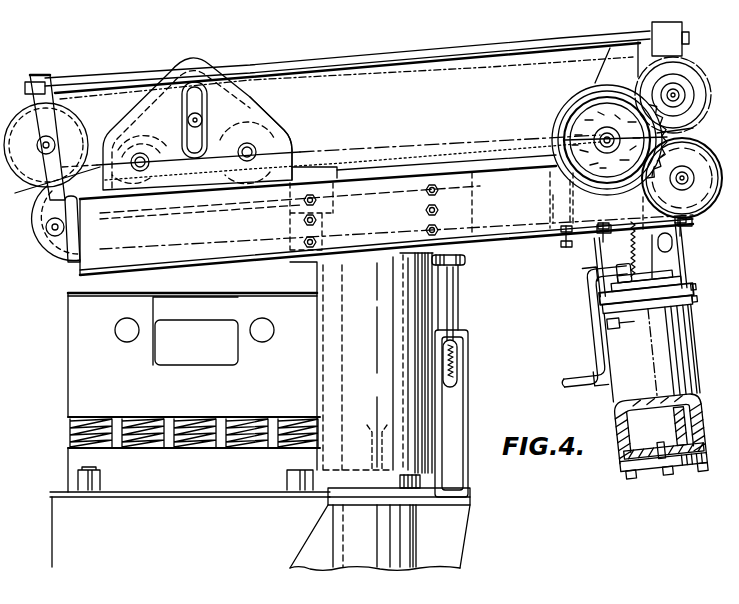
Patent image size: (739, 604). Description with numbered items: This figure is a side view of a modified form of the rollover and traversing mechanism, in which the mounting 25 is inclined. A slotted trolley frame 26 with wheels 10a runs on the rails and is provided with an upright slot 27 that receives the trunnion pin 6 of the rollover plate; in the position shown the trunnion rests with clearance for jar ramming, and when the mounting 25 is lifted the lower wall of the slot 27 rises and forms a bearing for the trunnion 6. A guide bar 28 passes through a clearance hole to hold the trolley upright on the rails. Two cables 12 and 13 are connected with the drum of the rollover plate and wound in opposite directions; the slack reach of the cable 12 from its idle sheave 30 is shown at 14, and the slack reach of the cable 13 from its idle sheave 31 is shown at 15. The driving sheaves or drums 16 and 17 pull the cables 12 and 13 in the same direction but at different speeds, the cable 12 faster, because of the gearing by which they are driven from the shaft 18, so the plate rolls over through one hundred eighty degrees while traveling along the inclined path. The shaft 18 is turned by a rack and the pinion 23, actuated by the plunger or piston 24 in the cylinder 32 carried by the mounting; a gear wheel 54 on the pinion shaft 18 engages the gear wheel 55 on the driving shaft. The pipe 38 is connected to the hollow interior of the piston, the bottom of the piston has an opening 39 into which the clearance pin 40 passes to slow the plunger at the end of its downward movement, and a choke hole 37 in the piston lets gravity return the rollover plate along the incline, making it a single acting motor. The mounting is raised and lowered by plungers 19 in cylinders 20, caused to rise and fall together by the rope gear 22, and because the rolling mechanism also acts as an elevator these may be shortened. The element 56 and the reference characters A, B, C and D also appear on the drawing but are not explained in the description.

The guide bar 28 is at (388, 58).
The cable 12 is at (438, 70).
The cable 13 is at (423, 150).
The slack reach 14 is at (344, 160).
The mounting 25 is at (518, 245).
The slack reach 15 is at (552, 240).
The idle sheave 30 is at (18, 118).
The idle sheave 31 is at (21, 212).
The upright slot 27 is at (207, 103).
The trunnion pin 6 is at (210, 117).
The wheels 10a is at (123, 142).
The slotted trolley frame 26 is at (280, 137).
The gear wheel 54 is at (568, 108).
The shaft 18 is at (598, 136).
The driving sheave 16 is at (697, 65).
The gear wheel 55 is at (692, 81).
The pulley hub 56 is at (682, 93).
The pinion 23 is at (672, 128).
The driving sheave 17 is at (699, 209).
The plunger 19 is at (342, 373).
The rope gear 22 is at (468, 392).
The cylinder 20 is at (165, 430).
The cylinder 32 is at (691, 353).
The pipe 38 is at (599, 301).
The choke hole 37 is at (620, 443).
The plunger 24 is at (688, 426).
The opening 39 is at (677, 453).
The clearance pin 40 is at (653, 469).
The point A is at (194, 113).
The point B is at (195, 220).
The point C is at (89, 165).
The point D is at (311, 150).